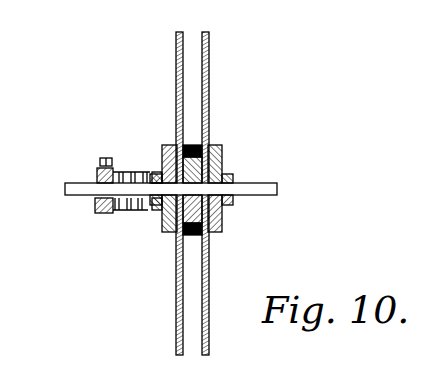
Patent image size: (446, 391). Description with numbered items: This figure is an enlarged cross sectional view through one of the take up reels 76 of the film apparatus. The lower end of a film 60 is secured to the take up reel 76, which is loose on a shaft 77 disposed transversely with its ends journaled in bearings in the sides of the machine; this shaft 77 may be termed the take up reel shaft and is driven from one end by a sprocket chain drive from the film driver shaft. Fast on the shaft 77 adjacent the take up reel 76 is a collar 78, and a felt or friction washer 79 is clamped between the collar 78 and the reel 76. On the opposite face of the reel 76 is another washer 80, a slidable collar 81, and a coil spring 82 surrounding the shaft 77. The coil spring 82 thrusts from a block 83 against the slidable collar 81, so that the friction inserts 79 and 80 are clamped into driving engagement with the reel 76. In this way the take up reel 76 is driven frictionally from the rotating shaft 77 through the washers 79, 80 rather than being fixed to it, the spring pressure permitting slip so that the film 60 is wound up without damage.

The take up reel 76 is at (209, 60).
The film 60 is at (192, 145).
The collar 78 is at (223, 170).
The shaft 77 is at (277, 190).
The felt or friction washer 79 is at (217, 236).
The slidable collar 81 is at (165, 224).
The washer 80 is at (170, 237).
The block 83 is at (99, 167).
The coil spring 82 is at (137, 172).